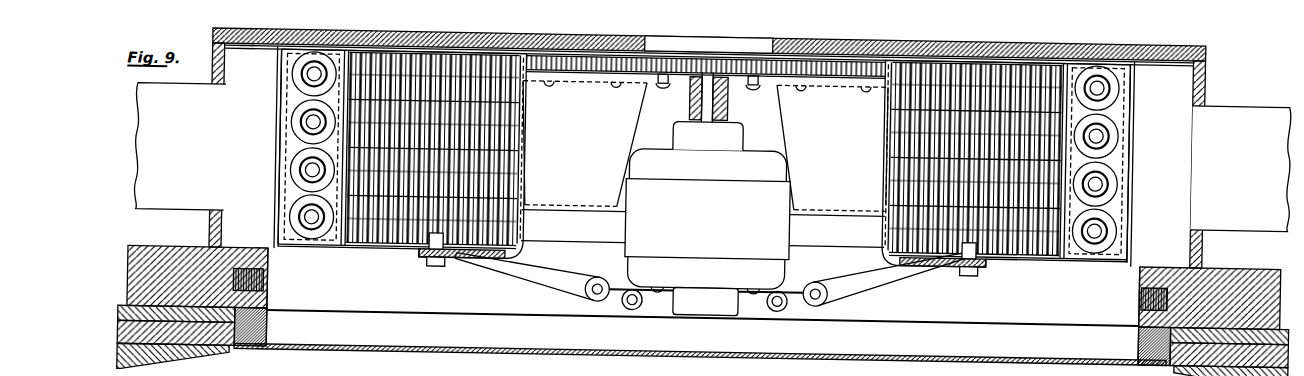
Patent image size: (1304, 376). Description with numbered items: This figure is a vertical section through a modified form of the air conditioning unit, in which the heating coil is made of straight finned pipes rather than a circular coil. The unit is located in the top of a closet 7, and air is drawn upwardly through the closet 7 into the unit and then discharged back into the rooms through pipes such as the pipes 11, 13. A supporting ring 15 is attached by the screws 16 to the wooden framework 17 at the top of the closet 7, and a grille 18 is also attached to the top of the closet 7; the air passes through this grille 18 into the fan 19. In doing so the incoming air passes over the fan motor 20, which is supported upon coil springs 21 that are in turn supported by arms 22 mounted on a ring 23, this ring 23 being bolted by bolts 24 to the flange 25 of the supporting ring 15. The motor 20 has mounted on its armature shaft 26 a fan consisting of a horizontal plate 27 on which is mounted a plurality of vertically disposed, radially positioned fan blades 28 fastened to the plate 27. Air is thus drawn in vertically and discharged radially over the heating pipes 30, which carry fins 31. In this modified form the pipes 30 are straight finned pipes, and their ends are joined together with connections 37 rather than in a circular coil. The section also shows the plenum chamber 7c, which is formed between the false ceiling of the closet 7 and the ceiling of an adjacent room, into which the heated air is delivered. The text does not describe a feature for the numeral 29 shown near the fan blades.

The closet 7 is at (212, 362).
The plenum chamber 7c is at (1156, 147).
The pipe 11 is at (1262, 102).
The pipe 13 is at (160, 157).
The supporting ring 15 is at (376, 303).
The screws 16 is at (241, 272).
The wooden framework 17 is at (251, 247).
The grille 18 is at (566, 345).
The fan 19 is at (645, 111).
The fan motor 20 is at (692, 218).
The coil springs 21 is at (636, 303).
The arms 22 is at (709, 276).
The ring 23 is at (605, 231).
The bolts 24 is at (440, 262).
The flange 25 is at (344, 246).
The armature shaft 26 is at (710, 105).
The horizontal plate 27 is at (597, 82).
The fan blades 28 is at (579, 134).
The fan blade 29 is at (867, 79).
The heating pipes 30 is at (305, 72).
The fins 31 is at (293, 98).
The connections 37 is at (293, 98).